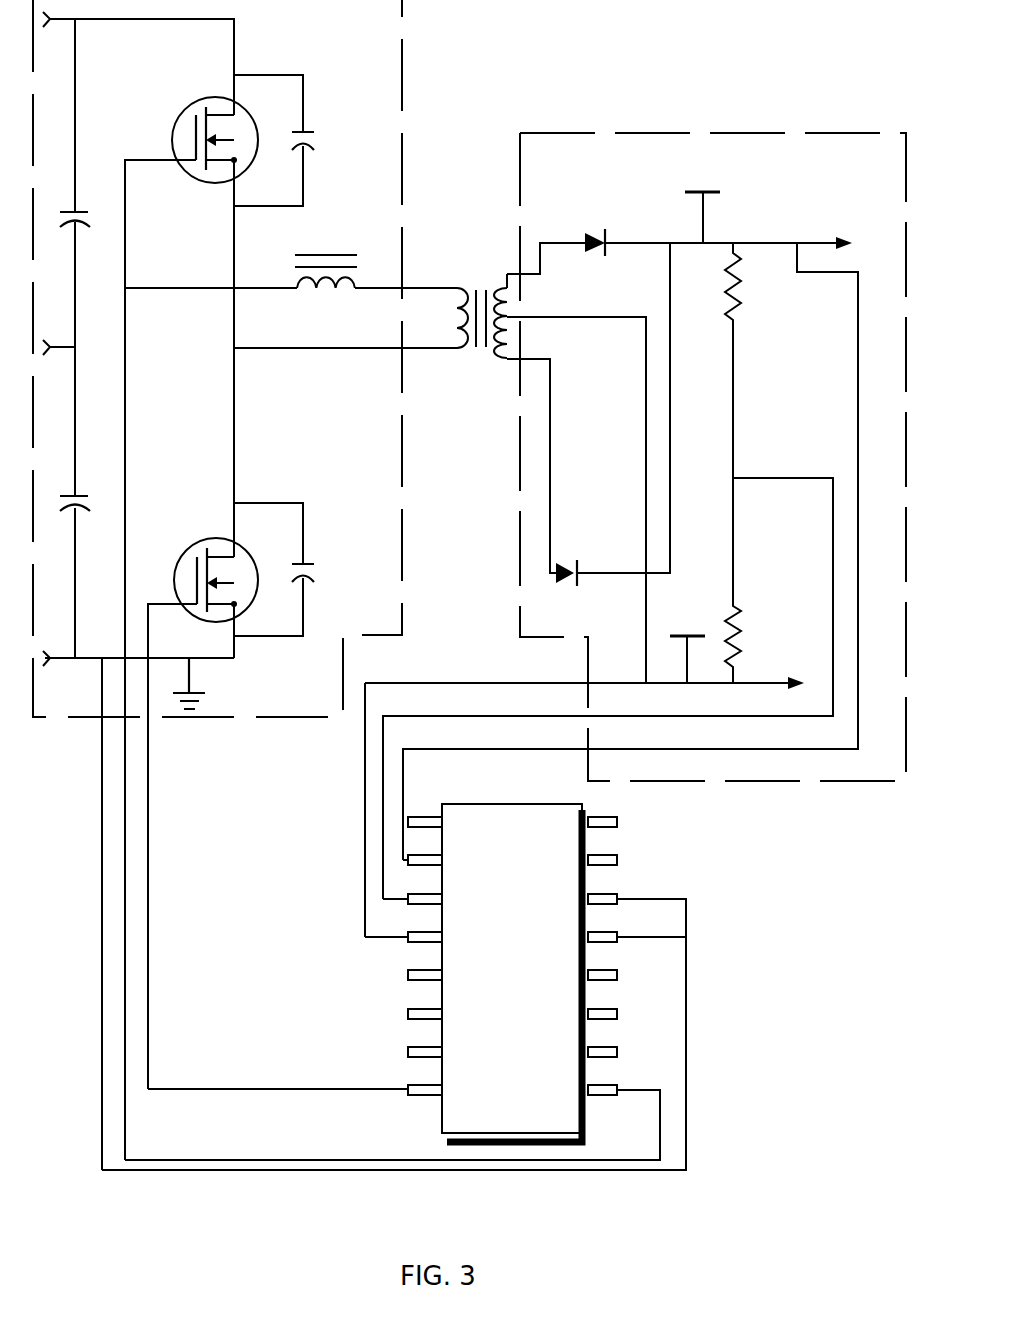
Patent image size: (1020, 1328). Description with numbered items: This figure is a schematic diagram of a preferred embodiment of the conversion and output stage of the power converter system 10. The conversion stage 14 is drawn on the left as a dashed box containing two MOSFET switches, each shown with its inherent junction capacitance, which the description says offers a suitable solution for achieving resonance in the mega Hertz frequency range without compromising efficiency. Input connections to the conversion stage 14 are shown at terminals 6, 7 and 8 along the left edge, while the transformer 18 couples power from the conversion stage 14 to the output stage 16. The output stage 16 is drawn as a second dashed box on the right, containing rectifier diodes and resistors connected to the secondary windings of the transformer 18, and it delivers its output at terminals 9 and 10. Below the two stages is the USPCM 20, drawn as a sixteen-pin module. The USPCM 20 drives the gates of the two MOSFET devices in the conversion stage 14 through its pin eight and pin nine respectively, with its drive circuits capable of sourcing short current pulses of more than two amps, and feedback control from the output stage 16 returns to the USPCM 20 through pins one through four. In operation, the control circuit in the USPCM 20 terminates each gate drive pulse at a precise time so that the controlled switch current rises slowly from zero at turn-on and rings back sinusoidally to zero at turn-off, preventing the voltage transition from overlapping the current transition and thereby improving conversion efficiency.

The first input terminal 6 is at (59, 13).
The second input terminal 7 is at (59, 334).
The third input terminal 8 is at (59, 646).
The positive output terminal 9 is at (824, 228).
The power converter system 10 is at (779, 667).
The conversion stage 14 is at (408, 97).
The output stage 16 is at (655, 133).
The transformer 18 is at (469, 244).
The USPCM 20 is at (638, 870).